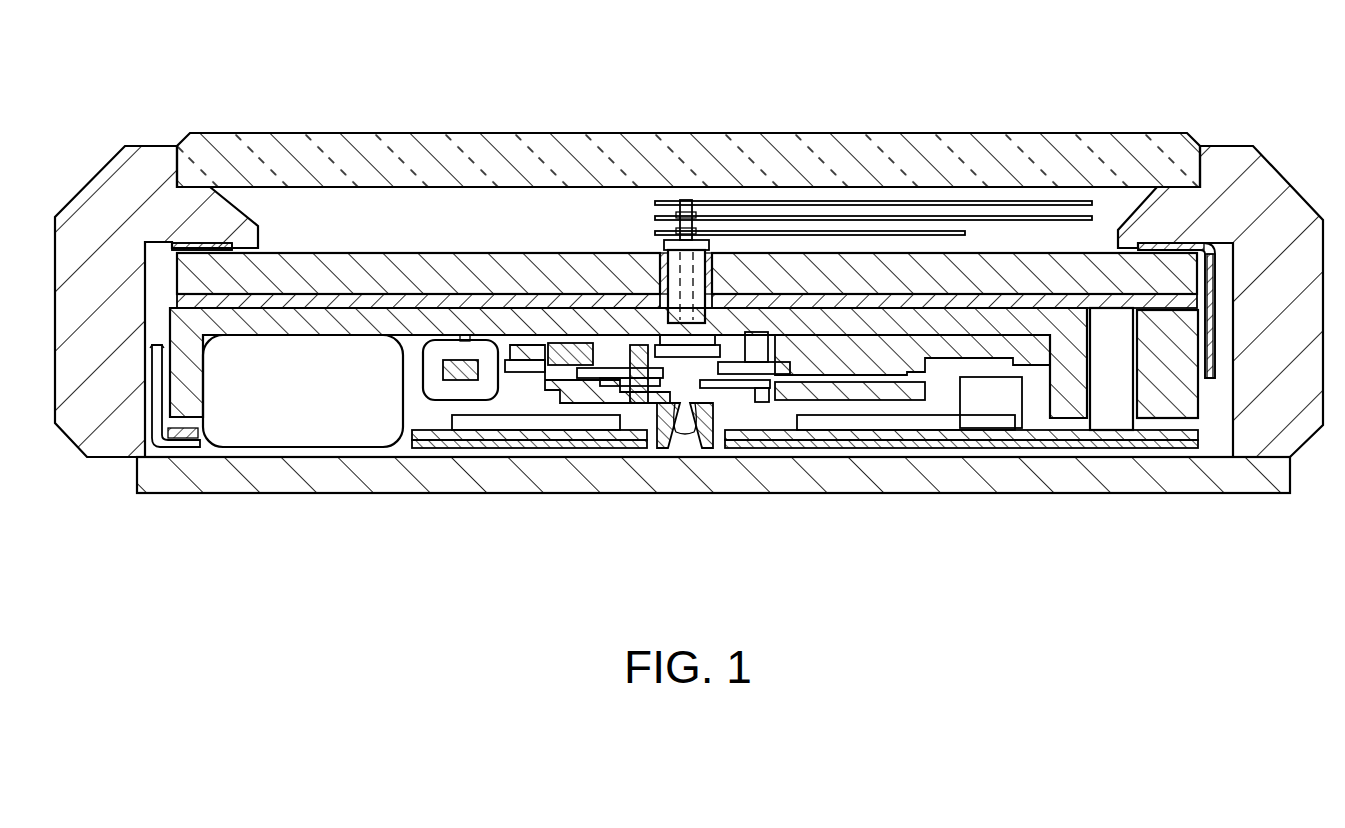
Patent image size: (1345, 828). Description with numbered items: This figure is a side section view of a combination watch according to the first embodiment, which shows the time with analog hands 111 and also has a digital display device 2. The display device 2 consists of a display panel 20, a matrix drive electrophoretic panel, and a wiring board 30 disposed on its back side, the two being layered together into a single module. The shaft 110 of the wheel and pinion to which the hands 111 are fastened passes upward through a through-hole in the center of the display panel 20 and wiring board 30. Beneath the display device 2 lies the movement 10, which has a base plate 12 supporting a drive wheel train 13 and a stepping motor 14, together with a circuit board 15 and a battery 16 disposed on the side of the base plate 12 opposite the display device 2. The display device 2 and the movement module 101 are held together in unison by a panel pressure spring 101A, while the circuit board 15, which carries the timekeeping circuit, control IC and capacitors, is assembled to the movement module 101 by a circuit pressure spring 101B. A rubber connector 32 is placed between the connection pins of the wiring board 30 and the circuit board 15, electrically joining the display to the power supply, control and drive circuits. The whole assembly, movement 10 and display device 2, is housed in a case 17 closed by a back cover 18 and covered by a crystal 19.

The display device 2 is at (687, 175).
The movement 10 is at (721, 319).
The base plate 12 is at (945, 358).
The drive wheel train 13 is at (757, 404).
The stepping motor 14 is at (433, 404).
The circuit board 15 is at (546, 440).
The battery 16 is at (266, 449).
The case 17 is at (1300, 214).
The back cover 18 is at (1058, 486).
The crystal 19 is at (1042, 133).
The display panel 20 is at (412, 257).
The wiring board 30 is at (485, 300).
The rubber connector 32 is at (1110, 417).
The movement module 101 is at (721, 298).
The panel pressure spring 101A is at (1218, 266).
The circuit pressure spring 101B is at (152, 456).
The shaft 110 is at (652, 257).
The hands 111 is at (940, 235).